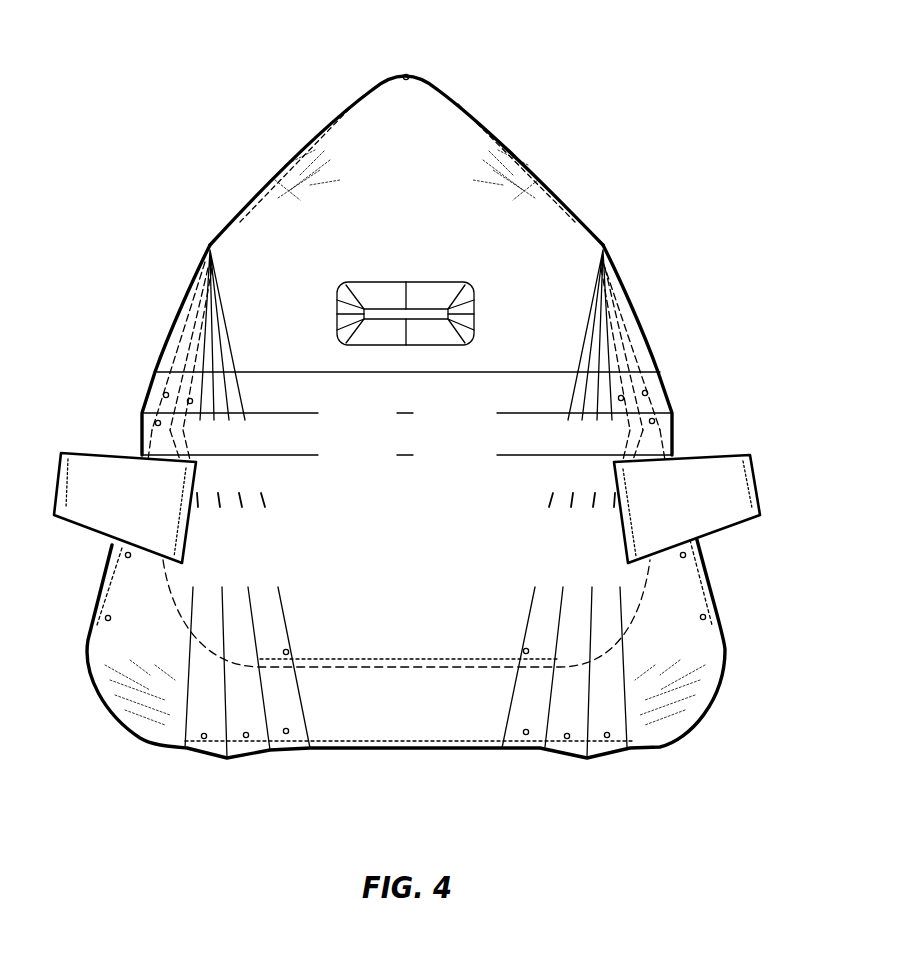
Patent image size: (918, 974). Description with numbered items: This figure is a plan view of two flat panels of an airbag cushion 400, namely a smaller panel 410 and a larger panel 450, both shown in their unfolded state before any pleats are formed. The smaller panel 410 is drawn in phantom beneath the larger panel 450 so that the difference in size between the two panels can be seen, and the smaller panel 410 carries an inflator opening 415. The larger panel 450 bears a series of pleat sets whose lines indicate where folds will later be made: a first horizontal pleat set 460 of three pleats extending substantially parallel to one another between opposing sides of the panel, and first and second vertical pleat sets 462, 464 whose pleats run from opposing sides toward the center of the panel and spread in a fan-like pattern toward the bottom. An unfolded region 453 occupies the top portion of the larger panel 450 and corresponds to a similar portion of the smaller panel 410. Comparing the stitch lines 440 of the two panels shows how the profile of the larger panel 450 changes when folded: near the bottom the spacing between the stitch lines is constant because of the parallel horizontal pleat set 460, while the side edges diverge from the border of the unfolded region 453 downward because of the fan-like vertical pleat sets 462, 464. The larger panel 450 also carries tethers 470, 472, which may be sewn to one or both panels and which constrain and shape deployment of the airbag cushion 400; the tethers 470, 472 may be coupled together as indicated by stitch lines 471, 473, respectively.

The airbag cushion 400 is at (538, 109).
The panel 410 is at (503, 220).
The inflator opening 415 is at (427, 312).
The stitch lines 440 is at (277, 185).
The unfolded region 453 is at (370, 138).
The first horizontal pleat set 460 is at (535, 338).
The first vertical pleat set 462 is at (215, 687).
The second vertical pleat set 464 is at (602, 665).
The panel 450 is at (382, 715).
The tether 470 is at (93, 512).
The stitch line 471 is at (63, 482).
The tether 472 is at (713, 517).
The stitch line 473 is at (757, 472).